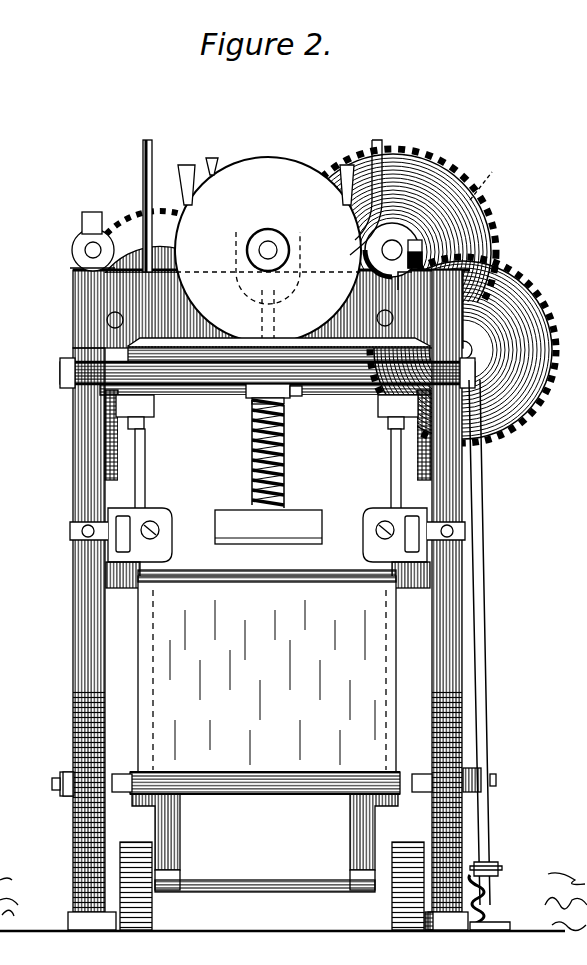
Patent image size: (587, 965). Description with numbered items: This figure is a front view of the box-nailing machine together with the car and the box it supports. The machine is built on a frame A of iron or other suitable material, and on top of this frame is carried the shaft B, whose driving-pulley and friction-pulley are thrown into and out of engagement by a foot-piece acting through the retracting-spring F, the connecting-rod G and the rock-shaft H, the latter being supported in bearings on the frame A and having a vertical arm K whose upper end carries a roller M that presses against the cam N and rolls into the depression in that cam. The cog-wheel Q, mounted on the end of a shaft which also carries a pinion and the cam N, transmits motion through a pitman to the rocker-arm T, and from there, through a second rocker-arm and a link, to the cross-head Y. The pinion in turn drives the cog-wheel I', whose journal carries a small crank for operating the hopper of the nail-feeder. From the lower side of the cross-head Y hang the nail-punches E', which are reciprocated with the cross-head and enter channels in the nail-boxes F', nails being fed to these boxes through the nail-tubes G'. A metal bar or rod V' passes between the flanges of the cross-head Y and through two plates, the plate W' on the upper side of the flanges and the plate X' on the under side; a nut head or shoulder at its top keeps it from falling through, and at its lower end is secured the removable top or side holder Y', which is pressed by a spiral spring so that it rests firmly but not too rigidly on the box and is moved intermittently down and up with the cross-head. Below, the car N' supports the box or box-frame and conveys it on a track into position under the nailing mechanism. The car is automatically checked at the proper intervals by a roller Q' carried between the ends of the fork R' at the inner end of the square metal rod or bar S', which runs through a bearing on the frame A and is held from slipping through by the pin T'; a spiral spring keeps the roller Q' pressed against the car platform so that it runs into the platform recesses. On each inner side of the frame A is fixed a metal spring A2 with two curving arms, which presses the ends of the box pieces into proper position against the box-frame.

The frame A is at (140, 290).
The metal spring A2 is at (269, 585).
The shaft B is at (268, 226).
The cog-wheel Q is at (393, 239).
The roller M is at (492, 194).
The cam N is at (393, 256).
The rocker-arm T is at (152, 285).
The vertical arm K is at (385, 310).
The cog-wheel I' is at (467, 350).
The cross-head Y is at (279, 350).
The rock-shaft H is at (205, 395).
The metal bar or rod V' is at (248, 426).
The plate X' is at (278, 405).
The plate W' is at (317, 405).
The nail-tubes G' is at (266, 313).
The nail-punches E' is at (267, 459).
The screw Z is at (286, 466).
The nail-boxes F' is at (267, 536).
The removable top or side holder Y' is at (268, 527).
The connecting-rod G is at (490, 642).
The pin T' is at (49, 773).
The square metal rod or bar S' is at (40, 788).
The fork R' is at (272, 772).
The roller Q' is at (269, 842).
The car N' is at (265, 793).
The retracting-spring F is at (489, 896).